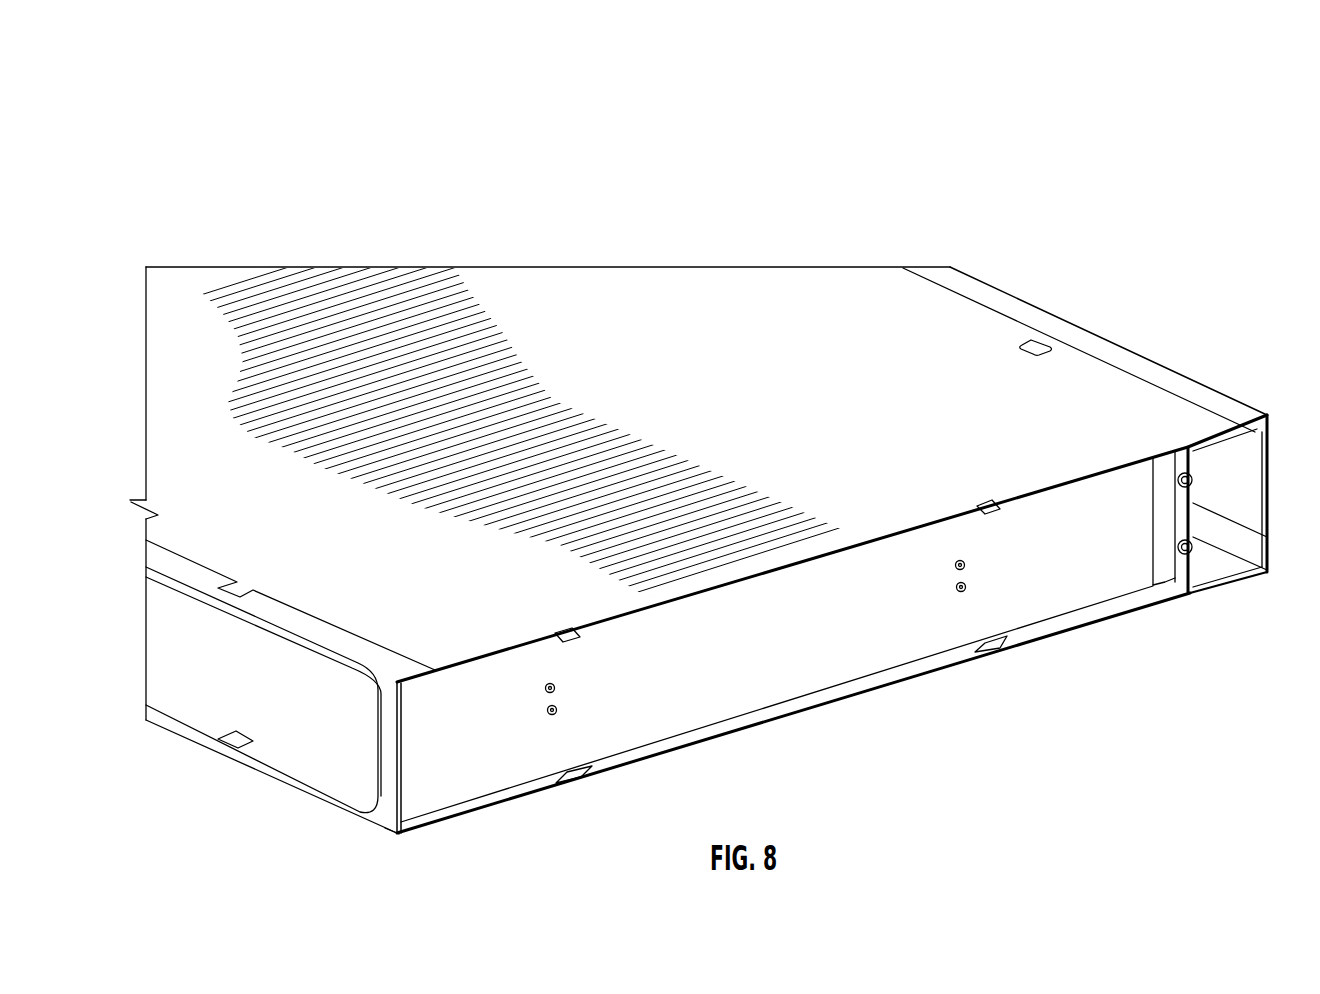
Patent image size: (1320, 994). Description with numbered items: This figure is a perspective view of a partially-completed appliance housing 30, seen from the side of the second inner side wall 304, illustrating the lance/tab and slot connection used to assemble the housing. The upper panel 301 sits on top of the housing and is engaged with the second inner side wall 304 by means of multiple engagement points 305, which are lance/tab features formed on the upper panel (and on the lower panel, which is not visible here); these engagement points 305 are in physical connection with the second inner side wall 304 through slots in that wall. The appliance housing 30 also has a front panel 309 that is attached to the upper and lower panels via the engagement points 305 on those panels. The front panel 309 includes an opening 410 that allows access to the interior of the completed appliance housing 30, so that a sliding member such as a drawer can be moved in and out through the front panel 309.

The appliance housing 30 is at (917, 138).
The upper panel 301 is at (781, 387).
The second inner side wall 304 is at (765, 652).
The engagement points 305 is at (575, 630).
The front panel 309 is at (392, 824).
The opening 410 is at (256, 692).